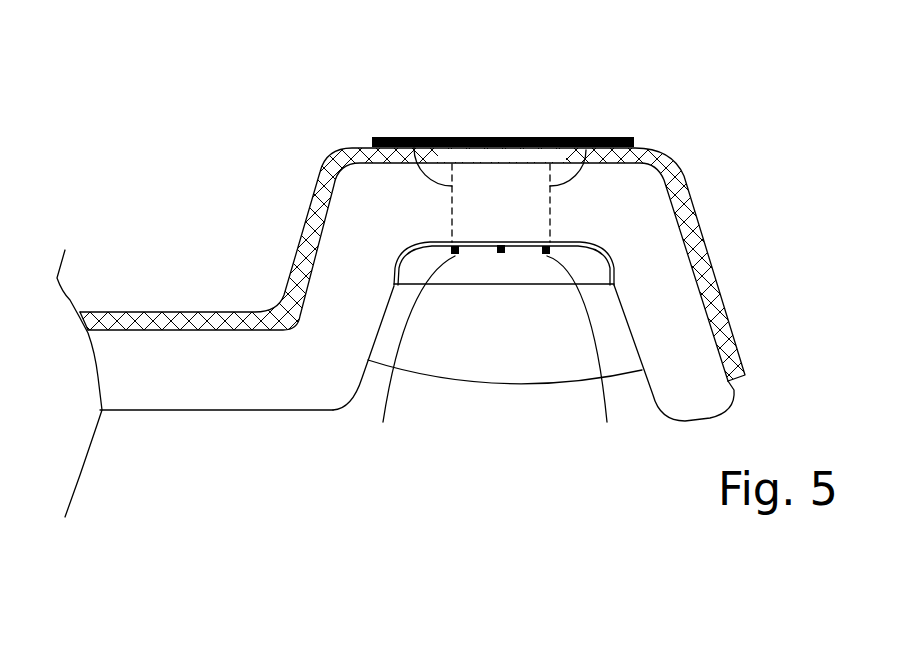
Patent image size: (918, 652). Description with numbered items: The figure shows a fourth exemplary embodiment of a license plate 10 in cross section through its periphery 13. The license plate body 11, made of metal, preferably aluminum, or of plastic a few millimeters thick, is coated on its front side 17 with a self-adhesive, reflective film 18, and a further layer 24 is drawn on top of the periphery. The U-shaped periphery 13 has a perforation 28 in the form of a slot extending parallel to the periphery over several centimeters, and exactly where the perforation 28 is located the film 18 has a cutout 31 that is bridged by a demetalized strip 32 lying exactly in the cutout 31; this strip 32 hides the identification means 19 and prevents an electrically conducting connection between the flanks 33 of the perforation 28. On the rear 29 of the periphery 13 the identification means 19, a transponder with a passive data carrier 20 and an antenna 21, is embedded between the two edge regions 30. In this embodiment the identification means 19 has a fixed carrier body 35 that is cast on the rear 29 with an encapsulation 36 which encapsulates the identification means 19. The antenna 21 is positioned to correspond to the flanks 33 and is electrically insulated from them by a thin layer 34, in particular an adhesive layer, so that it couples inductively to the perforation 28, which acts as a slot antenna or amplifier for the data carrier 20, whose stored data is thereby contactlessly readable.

The license plate 10 is at (189, 238).
The license plate body 11 is at (158, 392).
The periphery 13 is at (640, 198).
The front side 17 is at (96, 328).
The film 18 is at (210, 312).
The identification means 19 is at (515, 302).
The data carrier 20 is at (505, 247).
The antenna 21 is at (495, 350).
The conductive layer 24 is at (378, 138).
The perforation 28 is at (475, 180).
The rear 29 is at (342, 403).
The edge regions 30 is at (397, 270).
The cutout 31 is at (450, 137).
The demetalized strip 32 is at (530, 137).
The flanks 33 is at (405, 137).
The thin layer 34 is at (615, 284).
The carrier body 35 is at (547, 277).
The encapsulation 36 is at (513, 368).